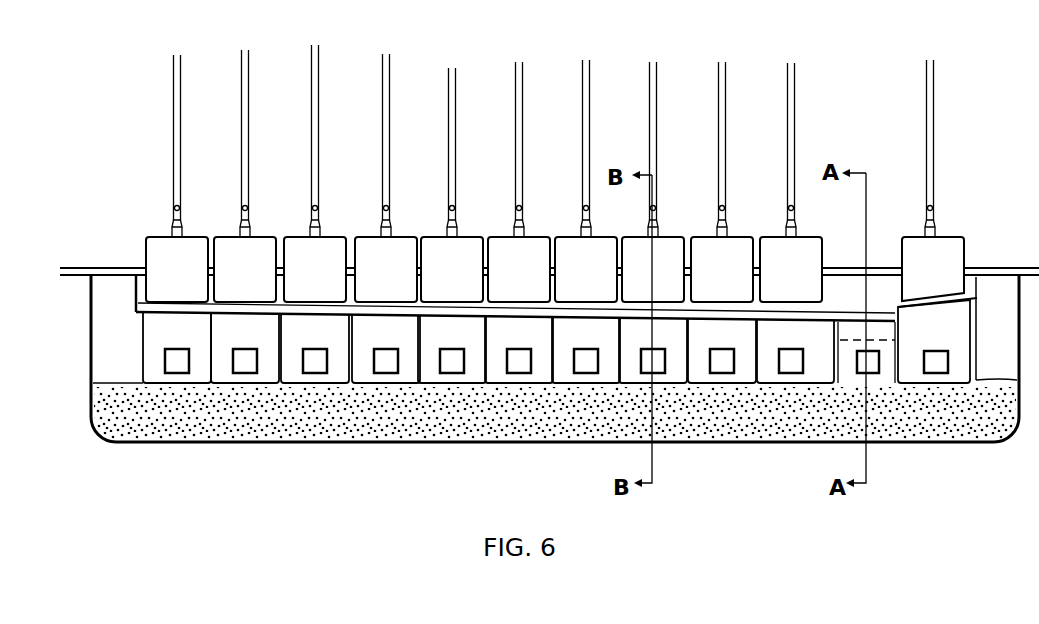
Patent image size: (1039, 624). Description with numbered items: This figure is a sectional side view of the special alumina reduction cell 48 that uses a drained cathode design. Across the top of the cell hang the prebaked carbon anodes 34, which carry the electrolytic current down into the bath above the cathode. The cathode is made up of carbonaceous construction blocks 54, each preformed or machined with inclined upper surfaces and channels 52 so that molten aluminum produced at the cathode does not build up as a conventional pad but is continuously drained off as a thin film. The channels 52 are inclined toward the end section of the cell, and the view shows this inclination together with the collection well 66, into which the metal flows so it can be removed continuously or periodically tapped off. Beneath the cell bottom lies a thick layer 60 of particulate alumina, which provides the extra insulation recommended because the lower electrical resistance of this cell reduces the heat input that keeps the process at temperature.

The prebaked carbon anode 34 is at (392, 248).
The alumina reduction cell 48 is at (950, 208).
The channel 52 is at (567, 316).
The carbonaceous construction block 54 is at (482, 372).
The layer of particulate alumina 60 is at (189, 427).
The collection well 66 is at (883, 333).